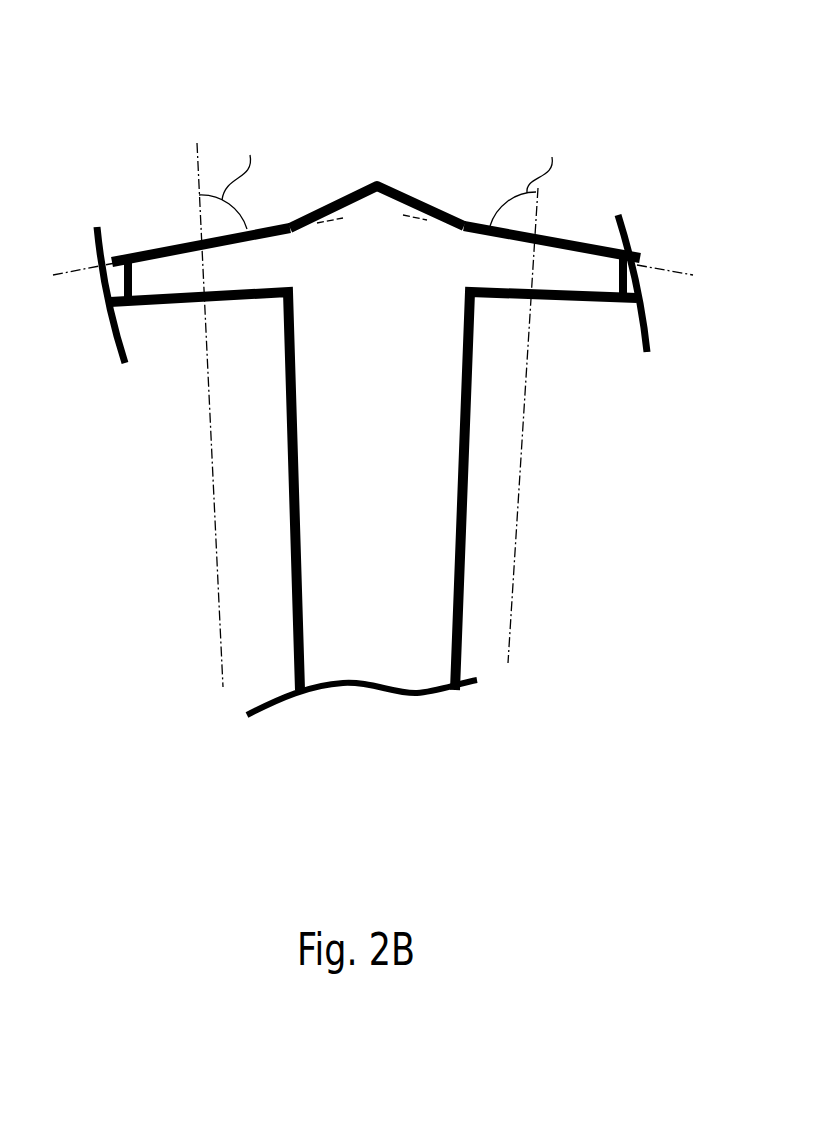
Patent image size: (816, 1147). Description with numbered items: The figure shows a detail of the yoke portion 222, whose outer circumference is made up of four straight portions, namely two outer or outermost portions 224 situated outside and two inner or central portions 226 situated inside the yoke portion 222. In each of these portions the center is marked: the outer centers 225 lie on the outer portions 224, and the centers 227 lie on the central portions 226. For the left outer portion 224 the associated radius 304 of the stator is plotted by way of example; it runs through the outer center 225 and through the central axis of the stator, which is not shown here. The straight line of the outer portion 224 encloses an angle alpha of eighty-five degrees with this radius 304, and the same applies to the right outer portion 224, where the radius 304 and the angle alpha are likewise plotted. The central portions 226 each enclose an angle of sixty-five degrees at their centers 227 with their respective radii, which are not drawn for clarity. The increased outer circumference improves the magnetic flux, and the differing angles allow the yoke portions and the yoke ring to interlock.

The yoke portion 222 is at (148, 87).
The outer portion 224 is at (138, 266).
The outer center 225 is at (198, 240).
The central portion 226 is at (358, 190).
The center of central portion 227 is at (328, 203).
The radius 304 is at (215, 530).